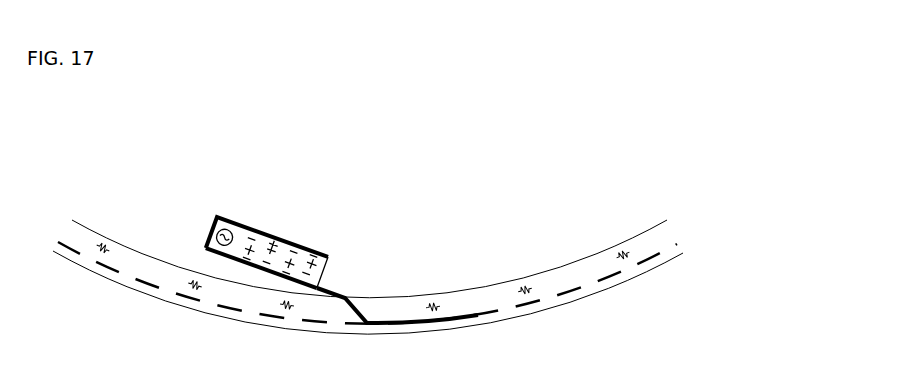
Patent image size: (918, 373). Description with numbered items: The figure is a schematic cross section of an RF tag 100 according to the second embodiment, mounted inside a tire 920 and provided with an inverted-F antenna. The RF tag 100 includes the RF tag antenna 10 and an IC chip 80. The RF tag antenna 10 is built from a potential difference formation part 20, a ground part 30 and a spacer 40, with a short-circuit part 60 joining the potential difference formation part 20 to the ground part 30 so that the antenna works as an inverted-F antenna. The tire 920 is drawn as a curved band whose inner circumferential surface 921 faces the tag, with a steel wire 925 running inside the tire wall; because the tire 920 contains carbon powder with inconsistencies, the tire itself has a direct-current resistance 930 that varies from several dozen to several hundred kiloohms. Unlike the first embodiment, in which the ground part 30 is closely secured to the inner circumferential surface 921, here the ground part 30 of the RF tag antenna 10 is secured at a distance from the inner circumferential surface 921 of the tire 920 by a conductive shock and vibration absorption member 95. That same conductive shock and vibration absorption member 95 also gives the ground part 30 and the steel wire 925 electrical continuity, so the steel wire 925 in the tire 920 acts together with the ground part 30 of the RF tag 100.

The RF tag 100 is at (346, 107).
The RF tag antenna 10 is at (348, 155).
The potential difference formation part 20 is at (248, 228).
The ground part 30 is at (296, 245).
The spacer 40 is at (322, 254).
The short-circuit part 60 is at (206, 236).
The IC chip 80 is at (211, 217).
The conductive shock and vibration absorption member 95 is at (345, 298).
The tire 920 is at (144, 273).
The inner circumferential surface 921 is at (102, 234).
The steel wire 925 is at (318, 323).
The direct-current resistance 930 is at (515, 290).